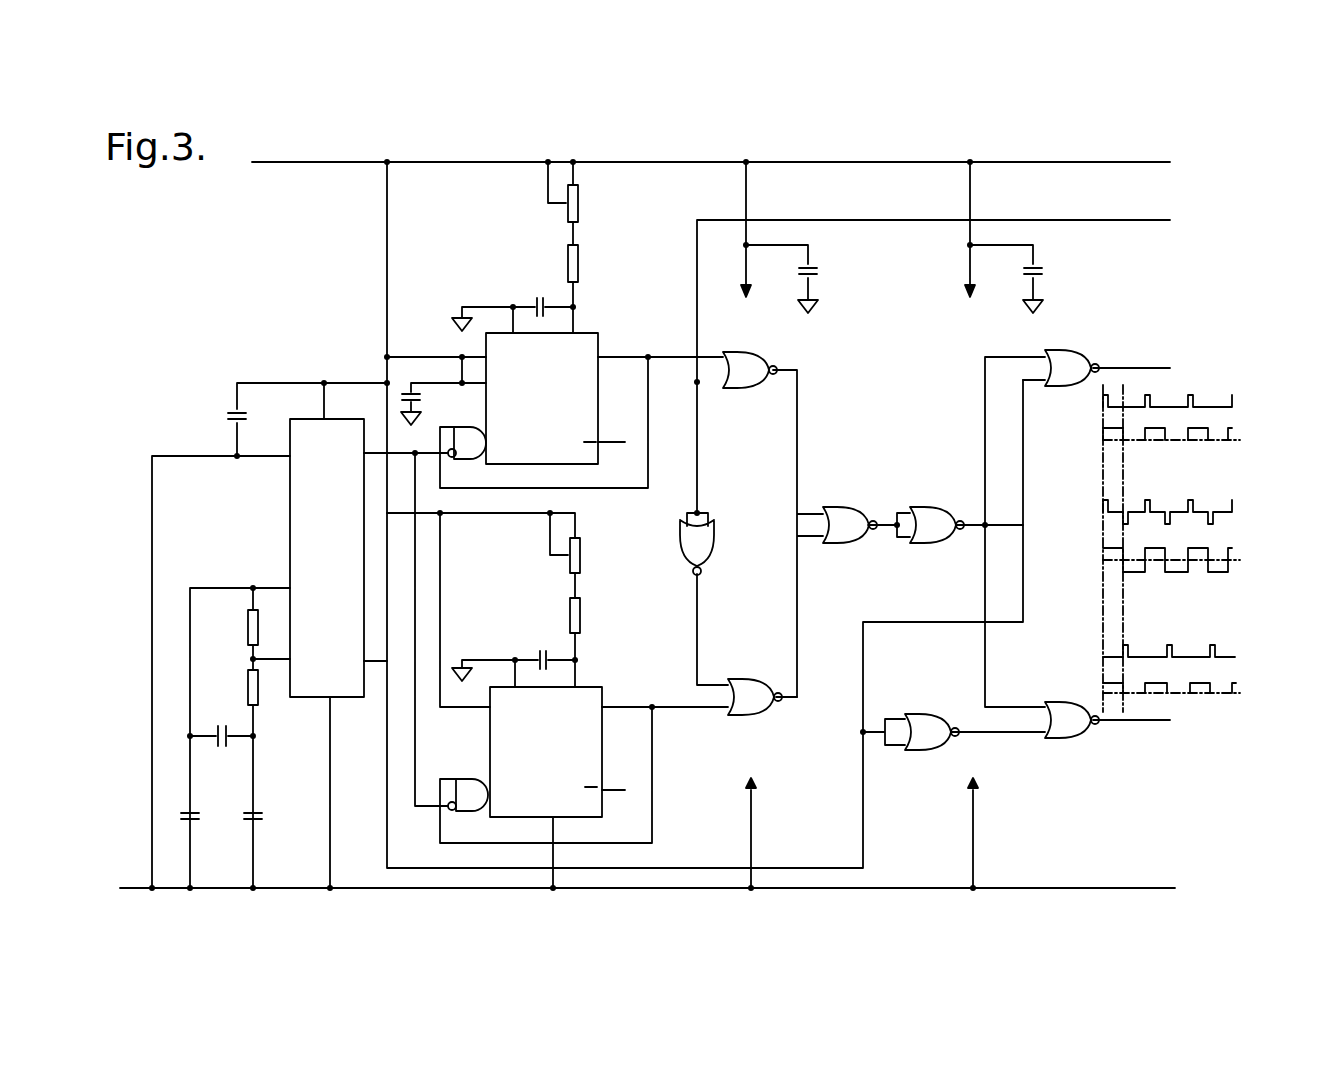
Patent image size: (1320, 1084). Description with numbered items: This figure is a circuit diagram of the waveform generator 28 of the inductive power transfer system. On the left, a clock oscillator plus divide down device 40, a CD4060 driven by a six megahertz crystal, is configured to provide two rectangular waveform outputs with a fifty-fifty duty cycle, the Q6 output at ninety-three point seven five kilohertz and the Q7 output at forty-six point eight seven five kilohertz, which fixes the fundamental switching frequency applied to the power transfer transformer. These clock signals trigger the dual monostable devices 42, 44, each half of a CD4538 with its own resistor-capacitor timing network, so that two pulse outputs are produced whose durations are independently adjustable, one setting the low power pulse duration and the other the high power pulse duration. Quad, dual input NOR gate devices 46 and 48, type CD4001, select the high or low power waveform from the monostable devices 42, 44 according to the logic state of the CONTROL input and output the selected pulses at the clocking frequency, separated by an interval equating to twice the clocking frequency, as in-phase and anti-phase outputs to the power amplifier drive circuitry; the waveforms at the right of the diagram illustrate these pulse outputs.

The waveform generator 28 is at (697, 530).
The clock oscillator plus divide down device 40 is at (348, 699).
The dual monostable device 42 is at (597, 465).
The dual monostable device 44 is at (588, 818).
The quad dual input NOR gate device 46 is at (838, 543).
The quad dual input NOR gate device 48 is at (928, 543).